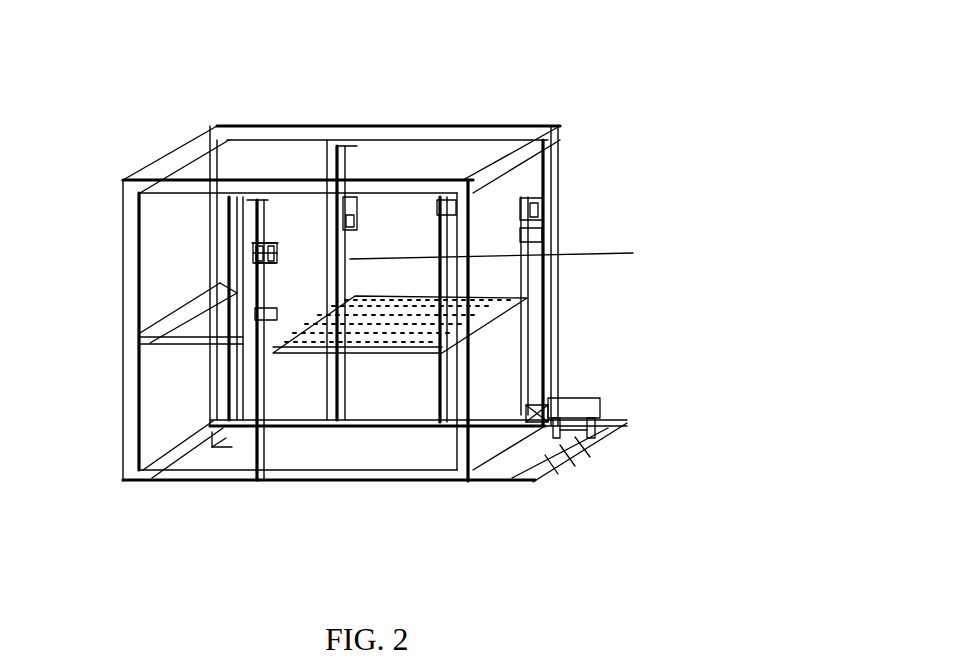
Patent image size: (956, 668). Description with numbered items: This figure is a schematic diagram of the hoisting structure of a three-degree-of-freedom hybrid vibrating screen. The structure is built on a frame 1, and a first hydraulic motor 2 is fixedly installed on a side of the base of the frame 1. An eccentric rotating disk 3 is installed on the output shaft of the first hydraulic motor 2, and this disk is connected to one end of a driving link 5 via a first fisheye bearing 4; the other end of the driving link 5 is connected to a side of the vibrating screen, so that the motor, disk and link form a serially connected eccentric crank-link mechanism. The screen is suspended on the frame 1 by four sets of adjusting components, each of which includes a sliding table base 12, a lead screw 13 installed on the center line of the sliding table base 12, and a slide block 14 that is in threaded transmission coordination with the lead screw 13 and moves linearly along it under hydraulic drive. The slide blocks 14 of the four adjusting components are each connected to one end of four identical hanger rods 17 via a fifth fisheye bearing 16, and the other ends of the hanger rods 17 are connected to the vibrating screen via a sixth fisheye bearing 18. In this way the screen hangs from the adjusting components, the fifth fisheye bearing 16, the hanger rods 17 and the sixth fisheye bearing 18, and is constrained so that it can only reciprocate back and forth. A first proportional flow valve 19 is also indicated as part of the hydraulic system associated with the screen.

The frame 1 is at (375, 344).
The first hydraulic motor 2 is at (574, 480).
The eccentric rotating disk 3 is at (589, 420).
The first fisheye bearing 4 is at (596, 371).
The driving link 5 is at (594, 306).
The sliding table base 12 is at (241, 137).
The lead screw 13 is at (216, 147).
The slide block 14 is at (183, 143).
The fifth fisheye bearing 16 is at (398, 160).
The hanger rod 17 is at (461, 274).
The sixth fisheye bearing 18 is at (398, 430).
The first proportional flow valve 19 is at (155, 276).